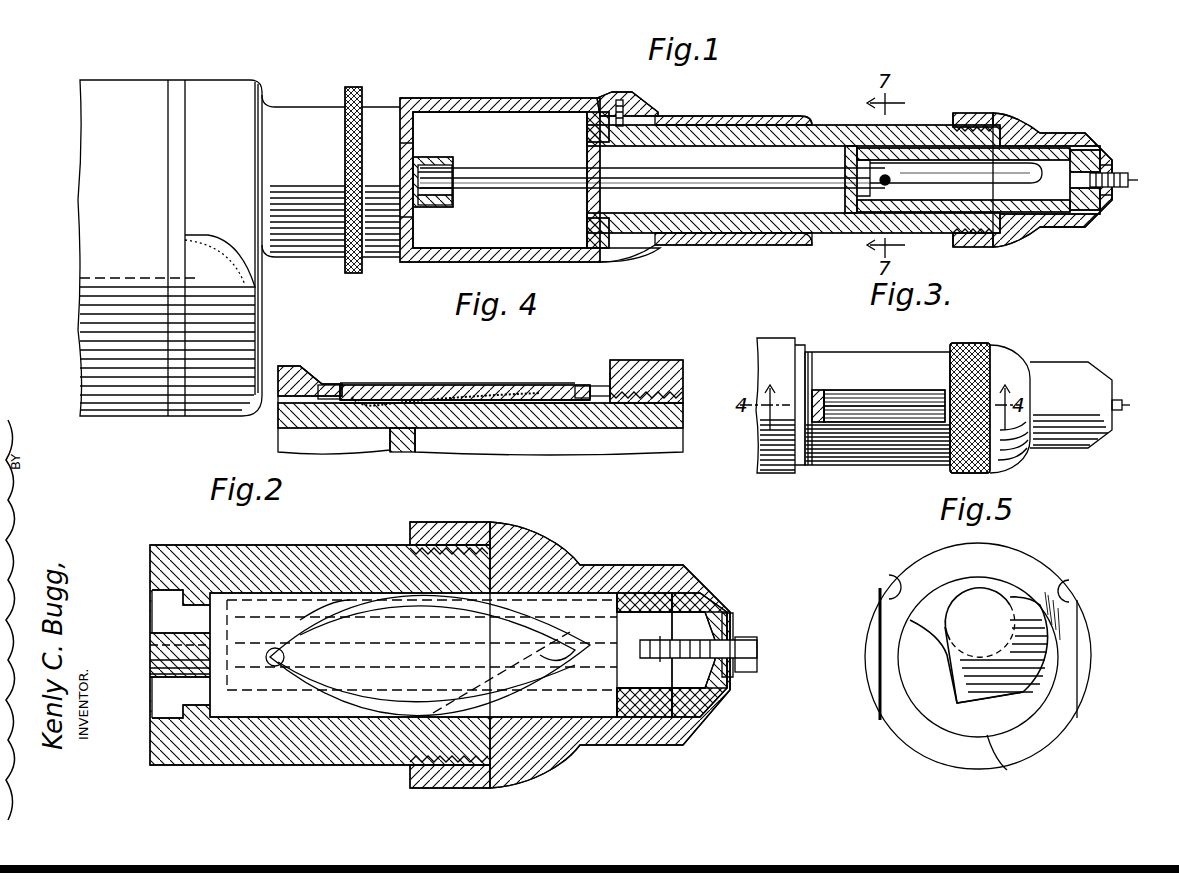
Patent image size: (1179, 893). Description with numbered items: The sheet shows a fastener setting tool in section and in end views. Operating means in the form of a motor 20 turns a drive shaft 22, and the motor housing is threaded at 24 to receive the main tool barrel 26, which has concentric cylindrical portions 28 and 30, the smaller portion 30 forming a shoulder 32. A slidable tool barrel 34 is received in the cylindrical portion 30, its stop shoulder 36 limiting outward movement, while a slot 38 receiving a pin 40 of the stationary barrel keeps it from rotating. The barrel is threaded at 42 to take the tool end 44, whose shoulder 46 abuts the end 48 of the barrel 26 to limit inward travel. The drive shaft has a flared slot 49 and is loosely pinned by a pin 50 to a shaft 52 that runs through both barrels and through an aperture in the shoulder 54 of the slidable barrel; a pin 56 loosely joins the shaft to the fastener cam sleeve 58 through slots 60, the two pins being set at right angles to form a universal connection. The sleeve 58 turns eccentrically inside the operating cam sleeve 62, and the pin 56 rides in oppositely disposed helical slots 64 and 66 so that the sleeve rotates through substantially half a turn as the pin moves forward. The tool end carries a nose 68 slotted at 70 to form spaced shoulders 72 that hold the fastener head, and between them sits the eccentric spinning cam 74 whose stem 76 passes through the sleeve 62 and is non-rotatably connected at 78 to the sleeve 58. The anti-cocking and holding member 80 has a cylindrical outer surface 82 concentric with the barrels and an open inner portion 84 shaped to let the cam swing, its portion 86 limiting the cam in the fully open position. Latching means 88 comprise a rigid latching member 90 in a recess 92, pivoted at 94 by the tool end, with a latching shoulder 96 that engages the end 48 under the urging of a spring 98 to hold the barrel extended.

In FIG. 1, the motor 20 is at (213, 88).
In FIG. 1, the drive shaft 22 is at (420, 160).
In FIG. 1, the threads 24 is at (403, 100).
In FIG. 1, the main tool barrel 26 is at (510, 100).
In FIG. 4, the main tool barrel 26 is at (282, 366).
In FIG. 3, the main tool barrel 26 is at (762, 338).
In FIG. 1, the cylindrical portion 28 is at (467, 113).
In FIG. 1, the cylindrical portion 30 is at (675, 116).
In FIG. 1, the shoulder 32 is at (602, 108).
In FIG. 1, the slidable tool barrel 34 is at (808, 128).
In FIG. 4, the slidable tool barrel 34 is at (600, 430).
In FIG. 3, the slidable tool barrel 34 is at (870, 465).
In FIG. 2, the slidable tool barrel 34 is at (172, 545).
In FIG. 1, the stop shoulder 36 is at (590, 125).
In FIG. 1, the slot 38 is at (745, 122).
In FIG. 1, the pin 40 is at (618, 96).
In FIG. 1, the threads 42 is at (967, 112).
In FIG. 1, the tool end 44 is at (998, 118).
In FIG. 4, the tool end 44 is at (652, 362).
In FIG. 3, the tool end 44 is at (975, 343).
In FIG. 2, the tool end 44 is at (562, 560).
In FIG. 1, the shoulder 46 is at (950, 115).
In FIG. 4, the shoulder 46 is at (608, 378).
In FIG. 2, the shoulder 46 is at (405, 532).
In FIG. 1, the end of barrel 48 is at (805, 240).
In FIG. 4, the end of barrel 48 is at (308, 364).
In FIG. 3, the end of barrel 48 is at (800, 465).
In FIG. 1, the flared slot 49 is at (448, 200).
In FIG. 1, the pin 50 is at (442, 163).
In FIG. 1, the shaft 52 is at (490, 170).
In FIG. 2, the shaft 52 is at (160, 647).
In FIG. 1, the shoulder 54 is at (846, 150).
In FIG. 4, the shoulder 54 is at (405, 443).
In FIG. 2, the shoulder 54 is at (183, 607).
In FIG. 1, the pin 56 is at (890, 176).
In FIG. 2, the pin 56 is at (272, 648).
In FIG. 1, the fastener cam sleeve 58 is at (1040, 148).
In FIG. 2, the fastener cam sleeve 58 is at (625, 593).
In FIG. 1, the slots 60 is at (1005, 163).
In FIG. 2, the slots 60 is at (405, 648).
In FIG. 1, the operating cam sleeve 62 is at (1075, 150).
In FIG. 2, the operating cam sleeve 62 is at (655, 600).
In FIG. 2, the helical slot 64 is at (348, 700).
In FIG. 2, the helical slot 66 is at (495, 603).
In FIG. 1, the nose 68 is at (1090, 135).
In FIG. 3, the nose 68 is at (1090, 365).
In FIG. 1, the slot 70 is at (1113, 160).
In FIG. 2, the slot 70 is at (733, 692).
In FIG. 5, the slot 70 is at (922, 562).
In FIG. 5, the shoulders 72 is at (887, 575).
In FIG. 1, the spinning cam 74 is at (1126, 174).
In FIG. 3, the spinning cam 74 is at (1118, 400).
In FIG. 2, the spinning cam 74 is at (748, 642).
In FIG. 5, the spinning cam 74 is at (1040, 622).
In FIG. 2, the stem 76 is at (736, 628).
In FIG. 5, the stem 76 is at (985, 608).
In FIG. 1, the non-rotatable connection 78 is at (1093, 222).
In FIG. 2, the non-rotatable connection 78 is at (690, 575).
In FIG. 1, the anti-cocking and holding member 80 is at (1133, 184).
In FIG. 3, the anti-cocking and holding member 80 is at (1124, 410).
In FIG. 5, the anti-cocking and holding member 80 is at (1025, 717).
In FIG. 2, the outer surface 82 is at (752, 672).
In FIG. 5, the outer surface 82 is at (1012, 760).
In FIG. 5, the inner portion 84 is at (1040, 660).
In FIG. 5, the portion 86 is at (918, 634).
In FIG. 4, the latching means 88 is at (528, 383).
In FIG. 3, the latching means 88 is at (828, 390).
In FIG. 4, the latching member 90 is at (362, 385).
In FIG. 3, the latching member 90 is at (890, 405).
In FIG. 4, the recess 92 is at (585, 390).
In FIG. 3, the recess 92 is at (860, 395).
In FIG. 4, the pivot 94 is at (622, 372).
In FIG. 4, the latching shoulder 96 is at (330, 383).
In FIG. 4, the spring 98 is at (400, 398).